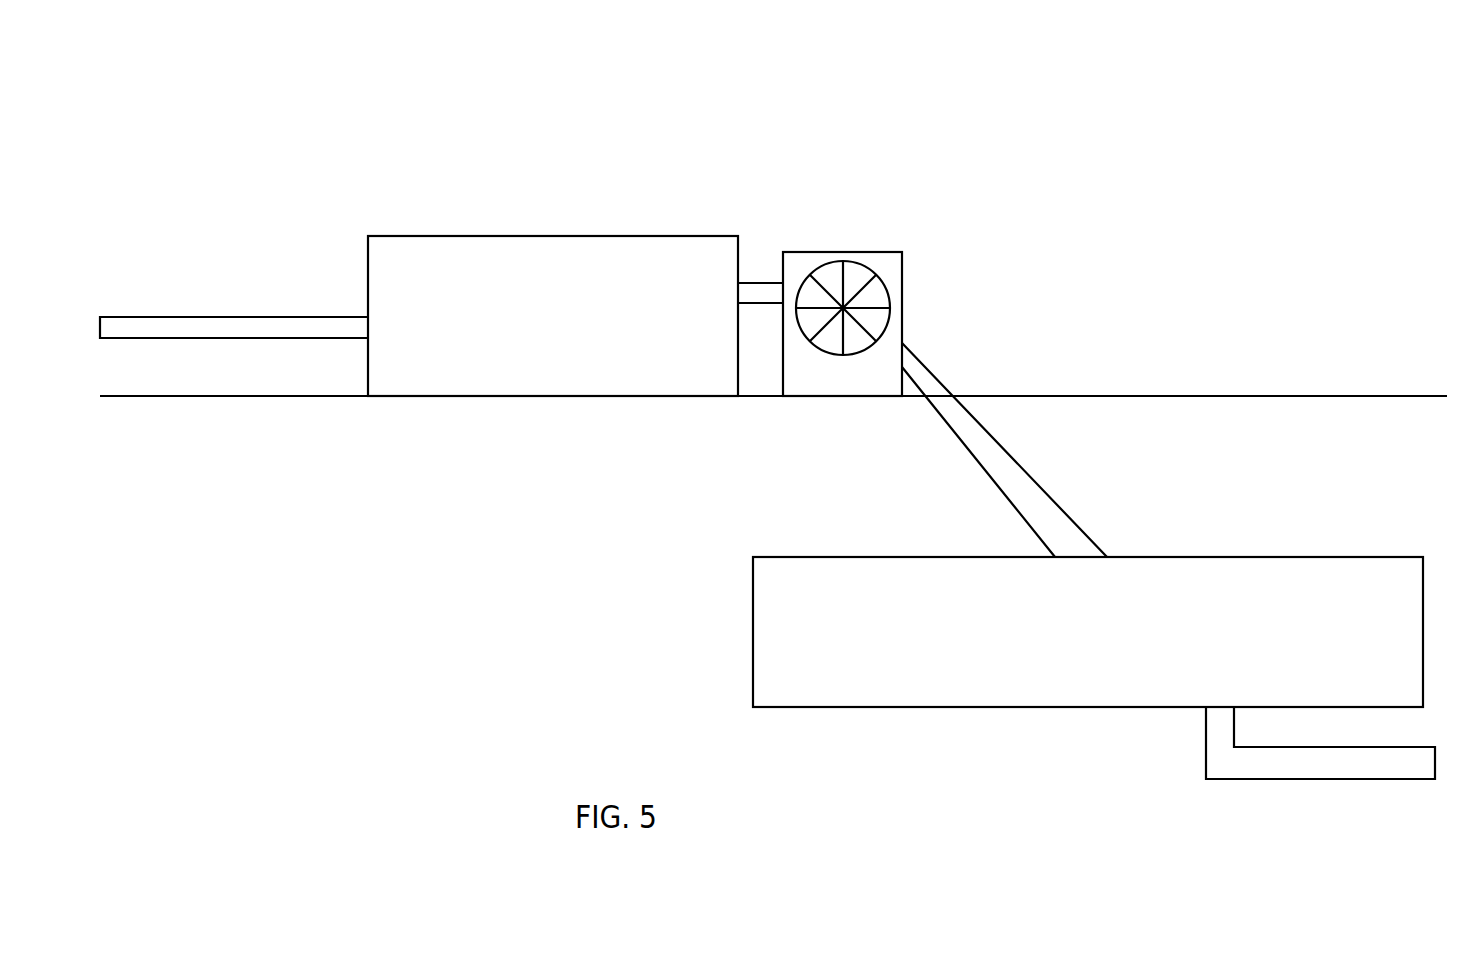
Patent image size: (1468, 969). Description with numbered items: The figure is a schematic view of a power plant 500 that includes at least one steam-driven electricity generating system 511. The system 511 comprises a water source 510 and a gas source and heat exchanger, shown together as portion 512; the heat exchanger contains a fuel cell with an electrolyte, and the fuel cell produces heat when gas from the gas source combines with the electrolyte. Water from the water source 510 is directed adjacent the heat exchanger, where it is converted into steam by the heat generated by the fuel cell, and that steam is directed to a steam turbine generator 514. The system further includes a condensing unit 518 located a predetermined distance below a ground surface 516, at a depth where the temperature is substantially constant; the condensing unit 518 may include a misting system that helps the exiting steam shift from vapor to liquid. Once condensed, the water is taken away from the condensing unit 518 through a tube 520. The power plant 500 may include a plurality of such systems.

The power plant 500 is at (1148, 110).
The water source 510 is at (263, 316).
The steam-driven electricity generating system 511 is at (773, 182).
The gas source and heat exchanger portion 512 is at (603, 236).
The steam turbine generator 514 is at (843, 252).
The ground surface 516 is at (1107, 396).
The condensing unit 518 is at (1178, 557).
The tube 520 is at (1277, 779).